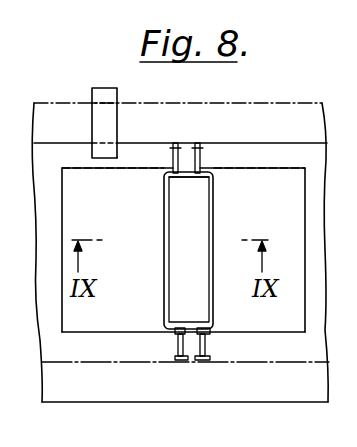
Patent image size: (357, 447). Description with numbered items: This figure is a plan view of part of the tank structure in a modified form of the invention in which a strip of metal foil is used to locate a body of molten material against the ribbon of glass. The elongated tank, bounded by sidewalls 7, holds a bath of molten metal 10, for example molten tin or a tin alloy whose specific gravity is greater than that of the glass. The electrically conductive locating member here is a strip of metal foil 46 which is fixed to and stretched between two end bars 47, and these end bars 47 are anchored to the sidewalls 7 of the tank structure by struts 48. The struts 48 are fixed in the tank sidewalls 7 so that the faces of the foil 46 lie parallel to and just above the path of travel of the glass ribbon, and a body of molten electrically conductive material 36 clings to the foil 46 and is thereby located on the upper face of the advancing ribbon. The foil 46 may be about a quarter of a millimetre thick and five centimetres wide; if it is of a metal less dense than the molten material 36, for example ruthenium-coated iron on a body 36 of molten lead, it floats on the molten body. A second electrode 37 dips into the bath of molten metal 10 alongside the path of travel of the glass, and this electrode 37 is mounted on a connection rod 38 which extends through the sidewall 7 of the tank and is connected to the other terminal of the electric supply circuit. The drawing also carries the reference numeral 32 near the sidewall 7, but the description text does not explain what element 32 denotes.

The sidewalls 7 is at (275, 115).
The bath of molten metal 10 is at (158, 345).
The recess 32 is at (77, 175).
The body of molten electrically conductive material 36 is at (165, 228).
The second electrode 37 is at (117, 157).
The connection rod 38 is at (114, 108).
The strip of metal foil 46 is at (178, 280).
The end bars 47 is at (174, 166).
The struts 48 is at (203, 160).